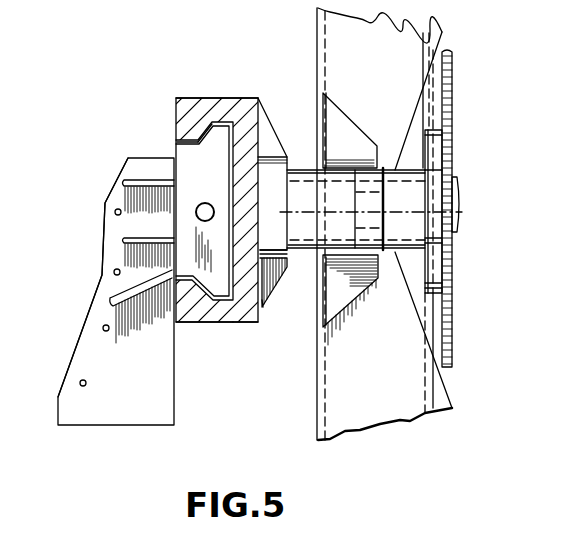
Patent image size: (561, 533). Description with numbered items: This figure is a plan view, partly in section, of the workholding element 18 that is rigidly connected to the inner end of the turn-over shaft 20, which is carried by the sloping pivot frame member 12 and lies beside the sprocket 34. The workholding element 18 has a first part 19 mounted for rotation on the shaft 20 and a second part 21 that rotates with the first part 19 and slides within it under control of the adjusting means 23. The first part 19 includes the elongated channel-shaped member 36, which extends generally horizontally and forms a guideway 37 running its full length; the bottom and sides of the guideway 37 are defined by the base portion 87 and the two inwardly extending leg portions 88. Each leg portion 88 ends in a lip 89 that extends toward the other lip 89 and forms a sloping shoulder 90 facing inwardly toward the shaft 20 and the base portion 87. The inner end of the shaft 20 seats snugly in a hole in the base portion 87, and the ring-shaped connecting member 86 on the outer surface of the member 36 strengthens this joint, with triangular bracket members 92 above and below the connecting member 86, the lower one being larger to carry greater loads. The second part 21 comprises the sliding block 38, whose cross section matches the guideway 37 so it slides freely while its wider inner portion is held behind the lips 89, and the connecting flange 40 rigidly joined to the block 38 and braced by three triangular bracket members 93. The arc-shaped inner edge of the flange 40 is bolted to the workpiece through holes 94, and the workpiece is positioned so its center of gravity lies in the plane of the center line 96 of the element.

The pivot frame member 12 is at (415, 405).
The workholding element 18 is at (105, 133).
The first part 19 is at (240, 103).
The turn-over shaft 20 is at (461, 216).
The second part 21 is at (104, 285).
The adjusting means 23 is at (205, 203).
The sprocket 34 is at (452, 82).
The channel-shaped member 36 is at (213, 100).
The guideway 37 is at (243, 283).
The sliding block 38 is at (178, 156).
The connecting flange 40 is at (113, 229).
The ring-shaped connecting member 86 is at (280, 168).
The base portion 87 is at (262, 296).
The leg portion 88 is at (180, 104).
The lip 89 is at (182, 138).
The sloping shoulder 90 is at (197, 132).
The bracket member 92 is at (265, 133).
The bracket member 93 is at (133, 181).
The hole 94 is at (87, 388).
The center line 96 is at (196, 220).